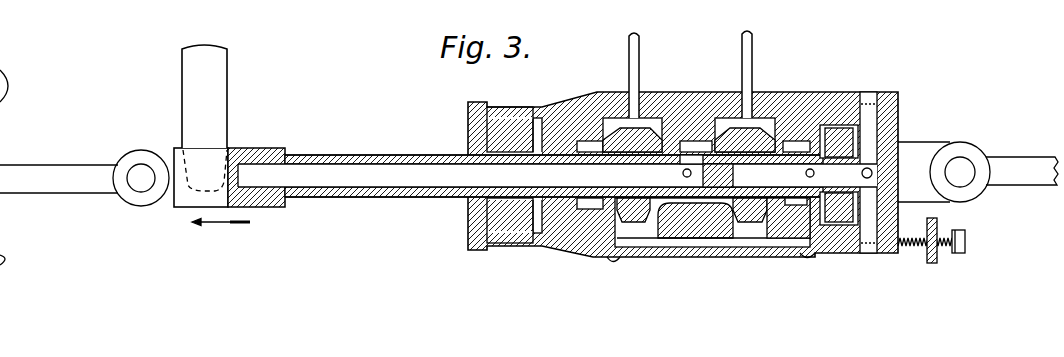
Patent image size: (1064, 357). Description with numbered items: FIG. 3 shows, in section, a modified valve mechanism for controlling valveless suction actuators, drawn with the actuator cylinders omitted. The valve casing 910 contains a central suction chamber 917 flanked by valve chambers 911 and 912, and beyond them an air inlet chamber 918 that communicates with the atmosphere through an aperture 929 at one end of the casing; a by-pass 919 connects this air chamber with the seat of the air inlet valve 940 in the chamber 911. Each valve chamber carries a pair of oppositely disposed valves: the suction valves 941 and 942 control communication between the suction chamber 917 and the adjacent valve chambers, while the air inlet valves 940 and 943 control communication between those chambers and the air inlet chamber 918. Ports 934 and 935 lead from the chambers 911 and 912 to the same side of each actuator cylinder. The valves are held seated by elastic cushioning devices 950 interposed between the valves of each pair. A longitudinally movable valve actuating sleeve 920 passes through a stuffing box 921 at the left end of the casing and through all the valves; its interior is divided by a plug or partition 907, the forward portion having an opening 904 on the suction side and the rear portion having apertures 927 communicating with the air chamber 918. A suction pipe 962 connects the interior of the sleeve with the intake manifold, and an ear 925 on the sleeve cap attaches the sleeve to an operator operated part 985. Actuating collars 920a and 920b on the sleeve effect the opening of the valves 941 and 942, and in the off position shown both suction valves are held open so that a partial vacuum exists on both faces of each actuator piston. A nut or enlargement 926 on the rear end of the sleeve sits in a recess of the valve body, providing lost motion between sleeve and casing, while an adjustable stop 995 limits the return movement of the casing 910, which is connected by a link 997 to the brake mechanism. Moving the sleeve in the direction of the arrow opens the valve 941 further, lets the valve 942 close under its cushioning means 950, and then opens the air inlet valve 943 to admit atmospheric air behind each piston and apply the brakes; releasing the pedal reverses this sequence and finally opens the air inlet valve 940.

The actuating rod 985 is at (80, 172).
The ear 925 is at (135, 169).
The suction pipe 962 is at (227, 74).
The valve actuating sleeve 920 is at (355, 196).
The stuffing box 921 is at (512, 231).
The air inlet valve 940 is at (598, 216).
The valve casing 910 is at (563, 93).
The cushioning device 950 is at (622, 120).
The port 934 is at (639, 44).
The actuating collar 920a is at (668, 92).
The actuating collar 920b is at (728, 130).
The suction chamber 917 is at (688, 147).
The port 935 is at (752, 42).
The air inlet chamber 918 is at (802, 145).
The pin 904 is at (682, 173).
The partition 907 is at (805, 173).
The apertures 927 is at (813, 173).
The aperture 929 is at (871, 173).
The link 997 is at (1005, 158).
The nut or enlargement 926 is at (843, 213).
The adjustable stop 995 is at (916, 248).
The valve chamber 911 is at (635, 224).
The suction valve 941 is at (665, 218).
The by-pass 919 is at (727, 243).
The suction valve 942 is at (750, 224).
The valve chamber 912 is at (773, 208).
The air inlet valve 943 is at (790, 222).